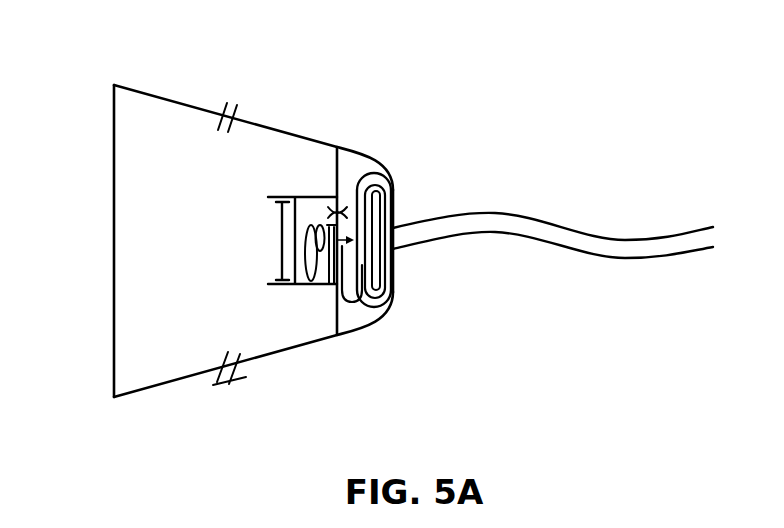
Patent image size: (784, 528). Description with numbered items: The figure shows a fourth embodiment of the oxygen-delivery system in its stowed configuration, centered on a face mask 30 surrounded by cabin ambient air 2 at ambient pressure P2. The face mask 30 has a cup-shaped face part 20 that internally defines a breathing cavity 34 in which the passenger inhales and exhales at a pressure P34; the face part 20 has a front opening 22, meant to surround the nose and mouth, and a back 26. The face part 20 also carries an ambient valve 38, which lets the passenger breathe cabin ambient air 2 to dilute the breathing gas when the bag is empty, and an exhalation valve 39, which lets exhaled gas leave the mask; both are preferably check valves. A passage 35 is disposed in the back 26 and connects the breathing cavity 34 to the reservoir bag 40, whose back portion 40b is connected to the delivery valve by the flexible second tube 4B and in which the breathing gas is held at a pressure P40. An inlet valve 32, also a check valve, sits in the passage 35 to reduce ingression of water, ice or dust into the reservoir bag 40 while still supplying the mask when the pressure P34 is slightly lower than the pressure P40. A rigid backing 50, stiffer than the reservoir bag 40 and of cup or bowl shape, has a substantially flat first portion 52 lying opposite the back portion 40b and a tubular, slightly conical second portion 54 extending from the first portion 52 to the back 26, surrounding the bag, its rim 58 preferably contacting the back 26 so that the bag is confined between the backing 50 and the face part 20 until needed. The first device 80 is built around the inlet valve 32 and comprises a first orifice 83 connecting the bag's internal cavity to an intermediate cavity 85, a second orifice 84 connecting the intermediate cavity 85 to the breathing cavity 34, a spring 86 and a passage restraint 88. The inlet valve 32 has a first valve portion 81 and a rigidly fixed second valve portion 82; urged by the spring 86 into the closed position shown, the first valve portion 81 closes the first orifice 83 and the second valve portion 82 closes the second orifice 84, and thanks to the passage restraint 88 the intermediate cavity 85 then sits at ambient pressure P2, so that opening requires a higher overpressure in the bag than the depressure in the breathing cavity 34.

The cabin ambient air 2 is at (569, 94).
The face part 20 is at (150, 93).
The front opening 22 is at (113, 348).
The back 26 is at (335, 168).
The face mask 30 is at (148, 420).
The inlet valve 32 is at (240, 257).
The breathing cavity 34 is at (145, 195).
The passage 35 is at (313, 285).
The ambient valve 38 is at (214, 122).
The exhalation valve 39 is at (220, 386).
The reservoir bag 40 is at (388, 165).
The back portion 40b is at (395, 223).
The second tube 4B is at (598, 235).
The backing 50 is at (478, 280).
The first portion 52 is at (397, 273).
The second portion 54 is at (383, 320).
The rim 58 is at (340, 205).
The first device 80 is at (280, 176).
The first valve portion 81 is at (328, 285).
The second valve portion 82 is at (293, 248).
The first orifice 83 is at (347, 270).
The second orifice 84 is at (283, 285).
The intermediate cavity 85 is at (312, 225).
The spring 86 is at (308, 285).
The passage restraint 88 is at (357, 195).
The ambient pressure P2 is at (292, 251).
The pressure in the breathing cavity P34 is at (270, 215).
The pressure in the reservoir bag P40 is at (393, 197).